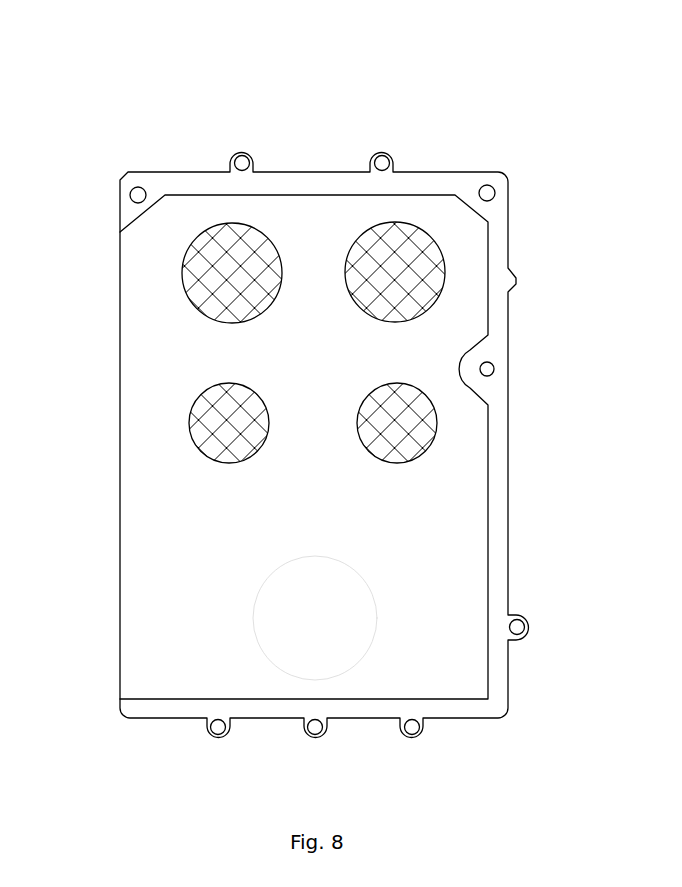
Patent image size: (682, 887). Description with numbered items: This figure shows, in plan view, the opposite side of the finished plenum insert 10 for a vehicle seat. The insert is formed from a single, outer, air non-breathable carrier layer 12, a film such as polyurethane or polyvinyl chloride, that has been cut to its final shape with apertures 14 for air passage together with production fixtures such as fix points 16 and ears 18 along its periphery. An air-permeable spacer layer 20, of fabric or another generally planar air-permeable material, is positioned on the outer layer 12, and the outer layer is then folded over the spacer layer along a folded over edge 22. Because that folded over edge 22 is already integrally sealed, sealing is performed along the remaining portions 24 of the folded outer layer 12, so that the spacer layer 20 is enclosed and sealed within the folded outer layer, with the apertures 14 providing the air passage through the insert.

The plenum insert 10 is at (355, 88).
The outer carrier layer 12 is at (450, 563).
The apertures 14 is at (440, 248).
The fix points 16 is at (133, 192).
The ears 18 is at (247, 156).
The spacer layer 20 is at (220, 437).
The folded over edge 22 is at (120, 283).
The sealed portions 24 is at (392, 195).